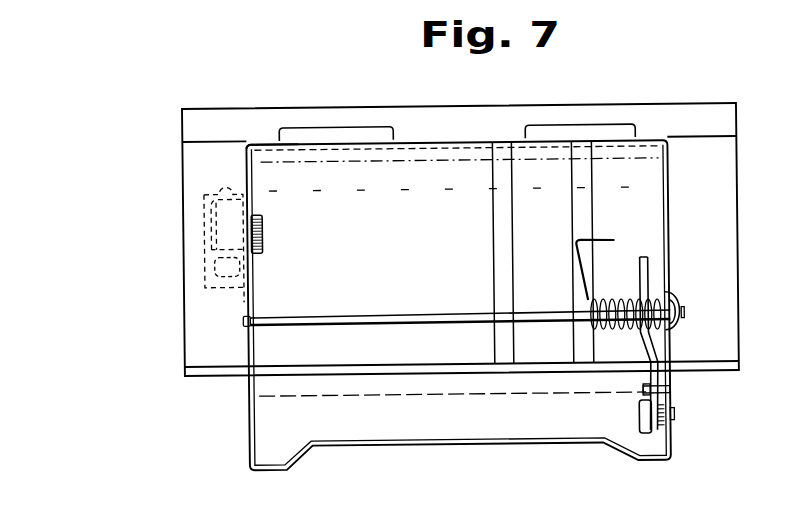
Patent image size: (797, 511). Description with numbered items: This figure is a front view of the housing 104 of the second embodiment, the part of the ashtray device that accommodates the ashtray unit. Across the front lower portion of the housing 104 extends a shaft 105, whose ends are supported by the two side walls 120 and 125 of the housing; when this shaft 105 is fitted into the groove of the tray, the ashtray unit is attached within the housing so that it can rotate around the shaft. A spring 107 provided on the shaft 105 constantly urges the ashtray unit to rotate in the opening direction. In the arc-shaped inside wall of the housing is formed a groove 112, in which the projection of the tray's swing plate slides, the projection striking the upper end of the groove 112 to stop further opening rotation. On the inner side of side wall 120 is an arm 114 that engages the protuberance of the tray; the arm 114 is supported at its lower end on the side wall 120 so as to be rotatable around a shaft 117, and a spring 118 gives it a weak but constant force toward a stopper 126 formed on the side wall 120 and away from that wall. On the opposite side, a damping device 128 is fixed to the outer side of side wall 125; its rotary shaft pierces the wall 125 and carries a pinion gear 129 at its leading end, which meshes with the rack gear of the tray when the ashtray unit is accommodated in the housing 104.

The housing 104 is at (343, 174).
The shaft 105 is at (418, 312).
The spring 107 is at (587, 301).
The groove 112 is at (532, 222).
The arm 114 is at (648, 270).
The shaft 117 is at (639, 420).
The spring 118 is at (663, 434).
The side wall 120 is at (668, 202).
The side wall 125 is at (249, 170).
The stopper 126 is at (670, 391).
The damping device 128 is at (222, 220).
The pinion gear 129 is at (263, 238).